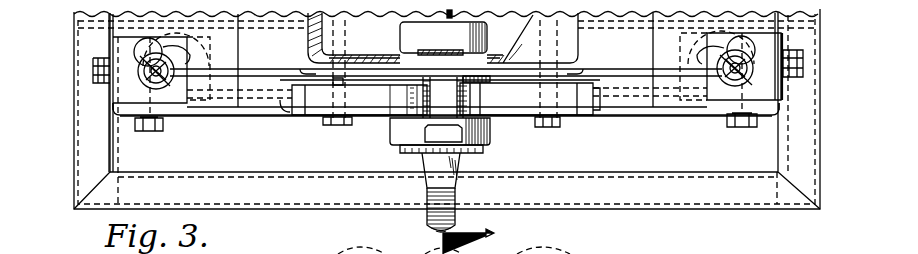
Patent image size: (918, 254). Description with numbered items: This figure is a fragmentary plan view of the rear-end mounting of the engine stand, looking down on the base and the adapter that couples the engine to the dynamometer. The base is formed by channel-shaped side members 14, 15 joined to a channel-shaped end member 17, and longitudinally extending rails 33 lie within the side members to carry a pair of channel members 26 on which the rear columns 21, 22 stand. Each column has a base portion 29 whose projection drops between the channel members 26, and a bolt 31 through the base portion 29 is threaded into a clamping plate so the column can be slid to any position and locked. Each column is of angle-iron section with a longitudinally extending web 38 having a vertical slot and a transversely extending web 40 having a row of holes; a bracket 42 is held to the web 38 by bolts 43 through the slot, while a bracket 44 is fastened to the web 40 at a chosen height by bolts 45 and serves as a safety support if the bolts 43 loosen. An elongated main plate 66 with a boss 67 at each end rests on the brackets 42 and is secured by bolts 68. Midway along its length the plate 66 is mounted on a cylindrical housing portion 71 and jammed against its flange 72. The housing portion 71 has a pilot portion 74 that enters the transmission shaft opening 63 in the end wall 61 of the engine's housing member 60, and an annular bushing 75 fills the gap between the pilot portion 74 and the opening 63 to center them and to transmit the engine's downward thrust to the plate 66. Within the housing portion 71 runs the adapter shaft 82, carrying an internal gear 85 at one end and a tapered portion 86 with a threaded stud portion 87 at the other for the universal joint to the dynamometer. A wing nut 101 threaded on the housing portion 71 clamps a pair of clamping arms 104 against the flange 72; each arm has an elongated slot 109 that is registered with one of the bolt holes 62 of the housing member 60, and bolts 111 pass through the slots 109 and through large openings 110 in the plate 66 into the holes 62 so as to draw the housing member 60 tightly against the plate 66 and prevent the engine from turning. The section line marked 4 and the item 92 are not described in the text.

The section line 4- 4 is at (454, 240).
The channel-shaped side member 14 is at (80, 161).
The channel-shaped side member 15 is at (808, 163).
The channel-shaped end member 17 is at (709, 197).
The rear column 21 is at (110, 35).
The rear column 22 is at (793, 38).
The channel member 26 is at (265, 92).
The base portion 29 is at (245, 108).
The bolt 31 is at (194, 55).
The rail 33 is at (112, 146).
The longitudinally extending web 38 is at (110, 41).
The transversely extending web 40 is at (224, 115).
The bracket 42 is at (178, 100).
The bolt 43 is at (93, 76).
The bracket 44 is at (171, 114).
The bolt 45 is at (156, 133).
The housing member 60 is at (580, 38).
The end wall 61 is at (362, 55).
The bolt hole 62 is at (343, 33).
The opening 63 is at (526, 99).
The main plate 66 is at (636, 68).
The boss 67 is at (145, 82).
The bolt 68 is at (447, 75).
The housing portion 71 is at (403, 153).
The flange 72 is at (359, 100).
The pilot portion 74 is at (430, 53).
The annular bushing 75 is at (379, 60).
The adapter shaft 82 is at (415, 222).
The internal gear 85 is at (486, 39).
The tapered portion 86 is at (465, 162).
The threaded stud portion 87 is at (458, 198).
The pin 92 is at (440, 32).
The wing nut 101 is at (487, 134).
The clamping arm 104 is at (290, 114).
The elongated slot 109 is at (310, 118).
The opening 110 is at (312, 68).
The bolt 111 is at (339, 127).